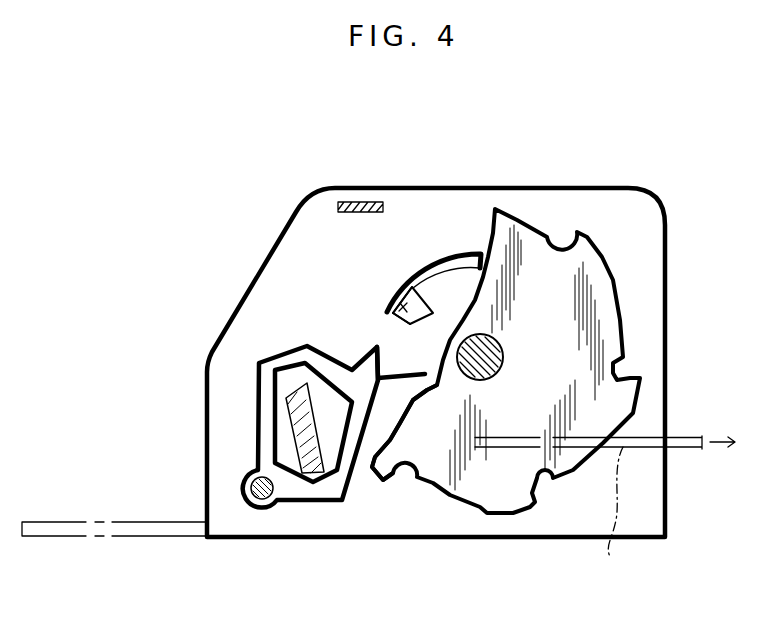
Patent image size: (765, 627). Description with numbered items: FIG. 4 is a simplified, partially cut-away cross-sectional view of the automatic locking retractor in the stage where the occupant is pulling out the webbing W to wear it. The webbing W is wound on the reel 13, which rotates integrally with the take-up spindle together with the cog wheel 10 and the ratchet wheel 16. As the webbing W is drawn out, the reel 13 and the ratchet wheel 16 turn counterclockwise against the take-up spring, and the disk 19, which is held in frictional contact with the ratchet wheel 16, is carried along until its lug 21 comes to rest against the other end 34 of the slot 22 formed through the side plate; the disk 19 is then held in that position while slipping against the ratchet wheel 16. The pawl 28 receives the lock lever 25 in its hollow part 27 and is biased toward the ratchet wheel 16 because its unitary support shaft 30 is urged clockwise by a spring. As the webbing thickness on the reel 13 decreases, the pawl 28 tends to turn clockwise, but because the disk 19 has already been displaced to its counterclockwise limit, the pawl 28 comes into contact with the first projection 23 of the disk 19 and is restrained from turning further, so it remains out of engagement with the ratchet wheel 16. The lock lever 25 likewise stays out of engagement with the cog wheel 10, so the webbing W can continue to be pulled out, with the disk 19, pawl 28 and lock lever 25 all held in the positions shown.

The cog wheel 10 is at (540, 231).
The reel 13 is at (623, 252).
The ratchet wheel 16 is at (445, 291).
The disk 19 is at (435, 382).
The lug 21 is at (393, 302).
The slot 22 is at (420, 281).
The first projection 23 is at (382, 365).
The lock lever 25 is at (305, 440).
The hollow part 27 is at (282, 407).
The pawl 28 is at (265, 377).
The support shaft 30 is at (262, 498).
The other end of the slot 34 is at (397, 312).
The webbing W is at (611, 517).